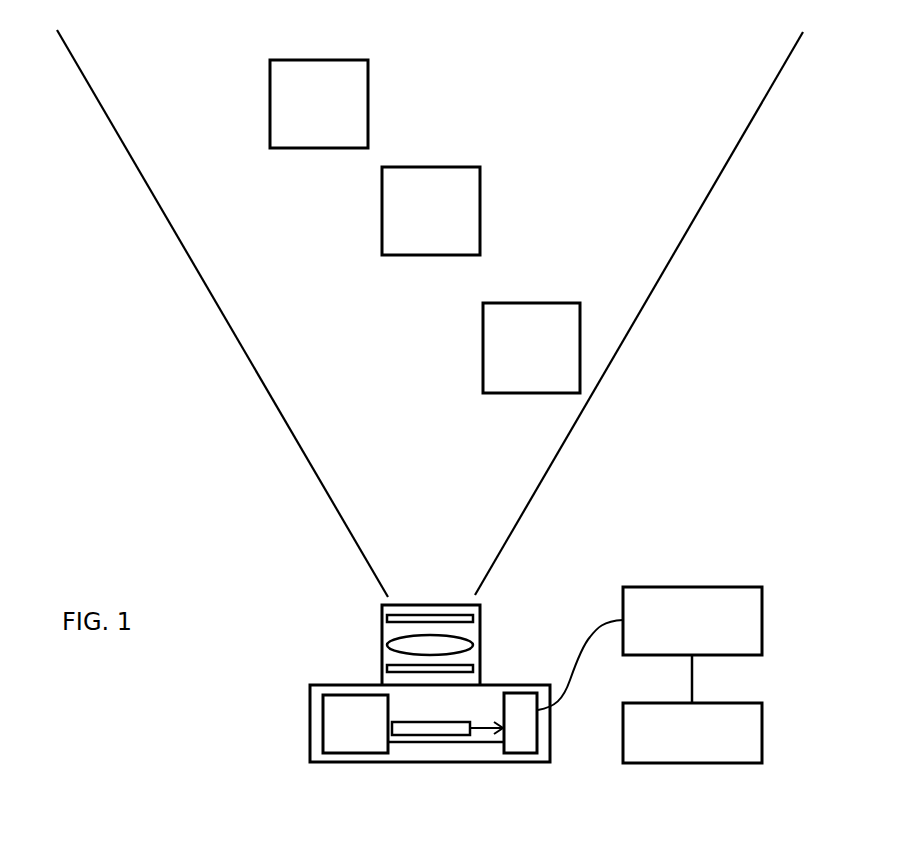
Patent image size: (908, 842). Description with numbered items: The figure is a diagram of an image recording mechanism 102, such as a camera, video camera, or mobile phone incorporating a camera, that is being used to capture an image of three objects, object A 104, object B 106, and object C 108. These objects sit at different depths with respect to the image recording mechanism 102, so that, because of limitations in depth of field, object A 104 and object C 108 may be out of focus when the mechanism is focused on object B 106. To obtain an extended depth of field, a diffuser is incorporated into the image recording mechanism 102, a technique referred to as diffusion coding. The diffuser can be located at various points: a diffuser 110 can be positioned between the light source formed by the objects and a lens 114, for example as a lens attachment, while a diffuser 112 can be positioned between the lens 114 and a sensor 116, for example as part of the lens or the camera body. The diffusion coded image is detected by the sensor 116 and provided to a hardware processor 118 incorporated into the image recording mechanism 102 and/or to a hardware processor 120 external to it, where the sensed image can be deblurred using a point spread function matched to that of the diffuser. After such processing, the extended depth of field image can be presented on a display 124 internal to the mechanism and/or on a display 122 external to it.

The image recording mechanism 102 is at (323, 762).
The object A 104 is at (580, 303).
The object B 106 is at (483, 187).
The object C 108 is at (368, 65).
The diffuser 110 is at (386, 613).
The diffuser 112 is at (386, 667).
The lens 114 is at (472, 642).
The sensor 116 is at (436, 767).
The hardware processor 118 is at (522, 753).
The hardware processor 120 is at (762, 618).
The display 122 is at (762, 730).
The display 124 is at (323, 723).